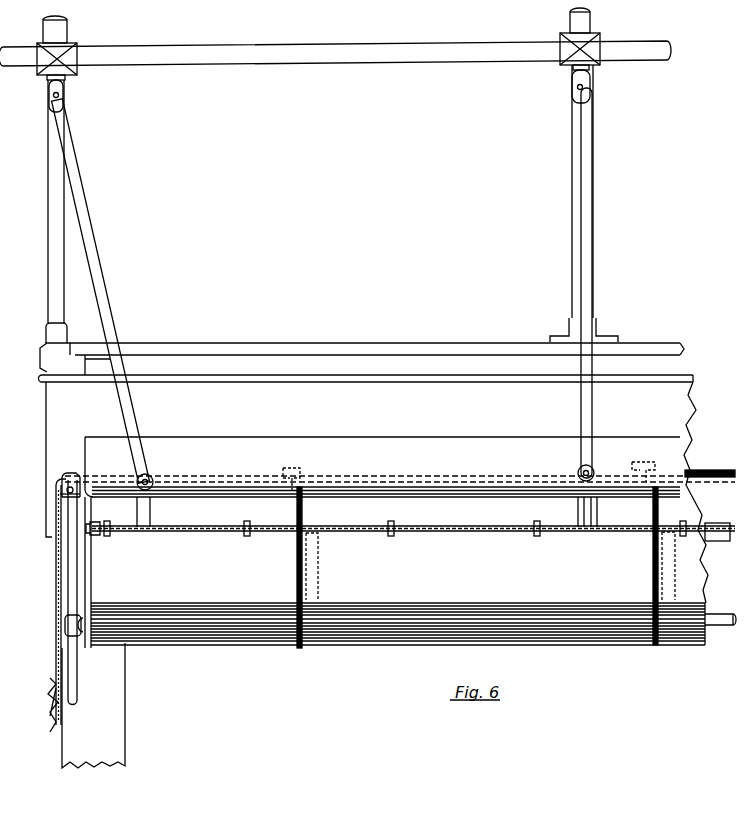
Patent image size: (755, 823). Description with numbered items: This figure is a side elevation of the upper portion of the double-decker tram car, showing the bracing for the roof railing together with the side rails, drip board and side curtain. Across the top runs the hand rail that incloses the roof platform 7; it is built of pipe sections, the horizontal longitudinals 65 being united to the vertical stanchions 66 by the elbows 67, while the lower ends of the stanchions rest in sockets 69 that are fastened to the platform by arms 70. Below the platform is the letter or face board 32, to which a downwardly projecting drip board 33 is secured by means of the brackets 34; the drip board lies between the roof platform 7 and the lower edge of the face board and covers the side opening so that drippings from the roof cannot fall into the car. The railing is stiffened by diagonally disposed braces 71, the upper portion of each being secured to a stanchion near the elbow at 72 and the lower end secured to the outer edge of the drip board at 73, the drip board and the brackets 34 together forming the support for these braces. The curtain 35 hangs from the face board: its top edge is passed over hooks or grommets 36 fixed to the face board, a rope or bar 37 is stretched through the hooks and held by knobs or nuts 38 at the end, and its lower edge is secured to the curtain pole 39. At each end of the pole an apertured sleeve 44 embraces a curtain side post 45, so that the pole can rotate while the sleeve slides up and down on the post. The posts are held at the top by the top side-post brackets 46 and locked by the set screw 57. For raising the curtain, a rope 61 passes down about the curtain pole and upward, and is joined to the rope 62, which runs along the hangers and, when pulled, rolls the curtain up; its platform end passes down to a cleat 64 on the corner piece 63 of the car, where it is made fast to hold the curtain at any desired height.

The roof platform 7 is at (374, 458).
The face board 32 is at (34, 538).
The drip board 33 is at (400, 472).
The brackets 34 is at (152, 512).
The curtain 35 is at (268, 652).
The hooks or grommets 36 is at (108, 521).
The rope or bar 37 is at (170, 532).
The knobs or nuts 38 is at (94, 522).
The curtain pole 39 is at (728, 626).
The apertured sleeve 44 is at (66, 627).
The curtain side posts 45 is at (70, 578).
The top side-post brackets 46 is at (67, 474).
The set screw 57 is at (62, 497).
The rope 61 is at (297, 570).
The rope 62 is at (700, 477).
The corner piece 63 is at (93, 705).
The cleat 64 is at (48, 682).
The longitudinals 65 is at (357, 62).
The stanchions 66 is at (48, 252).
The elbows 67 is at (70, 50).
The sockets 69 is at (46, 333).
The arms 70 is at (86, 346).
The braces 71 is at (98, 288).
The upper brace connection 72 is at (64, 98).
The lower brace connection 73 is at (150, 478).